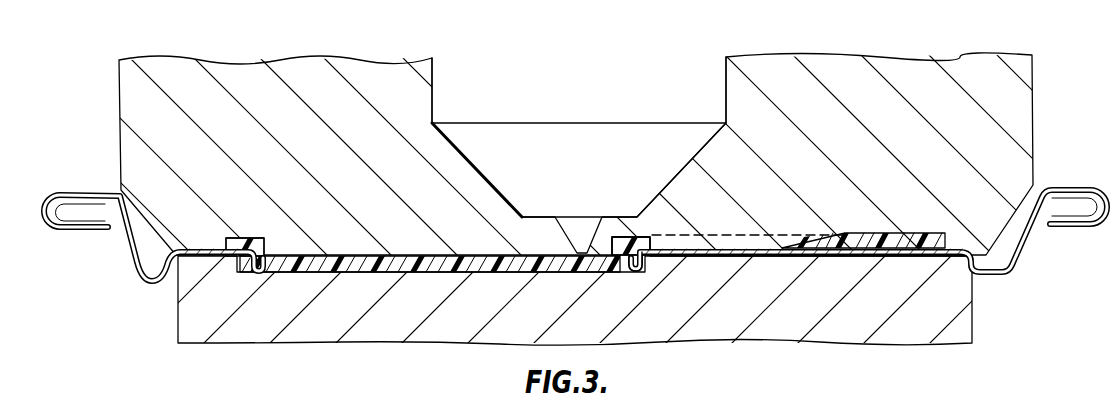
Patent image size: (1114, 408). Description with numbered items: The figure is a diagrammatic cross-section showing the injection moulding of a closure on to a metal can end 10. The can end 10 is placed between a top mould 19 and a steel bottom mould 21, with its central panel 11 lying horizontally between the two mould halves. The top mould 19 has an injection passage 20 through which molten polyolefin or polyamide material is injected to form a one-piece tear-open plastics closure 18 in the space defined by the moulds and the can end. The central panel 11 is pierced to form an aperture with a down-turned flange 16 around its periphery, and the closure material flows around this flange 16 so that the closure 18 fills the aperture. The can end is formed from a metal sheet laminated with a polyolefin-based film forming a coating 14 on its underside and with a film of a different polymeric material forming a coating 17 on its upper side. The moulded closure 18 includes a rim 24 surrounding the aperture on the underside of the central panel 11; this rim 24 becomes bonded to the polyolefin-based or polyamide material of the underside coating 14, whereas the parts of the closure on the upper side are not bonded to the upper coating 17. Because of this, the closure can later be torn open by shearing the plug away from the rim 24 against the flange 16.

The can end 10 is at (1044, 184).
The central panel 11 is at (764, 258).
The coating 14 is at (691, 257).
The down-turned flange 16 is at (620, 270).
The coating 17 is at (721, 247).
The tear-open plastics closure 18 is at (329, 252).
The top mould 19 is at (1018, 97).
The injection passage 20 is at (726, 72).
The bottom mould 21 is at (958, 301).
The rim 24 is at (643, 262).